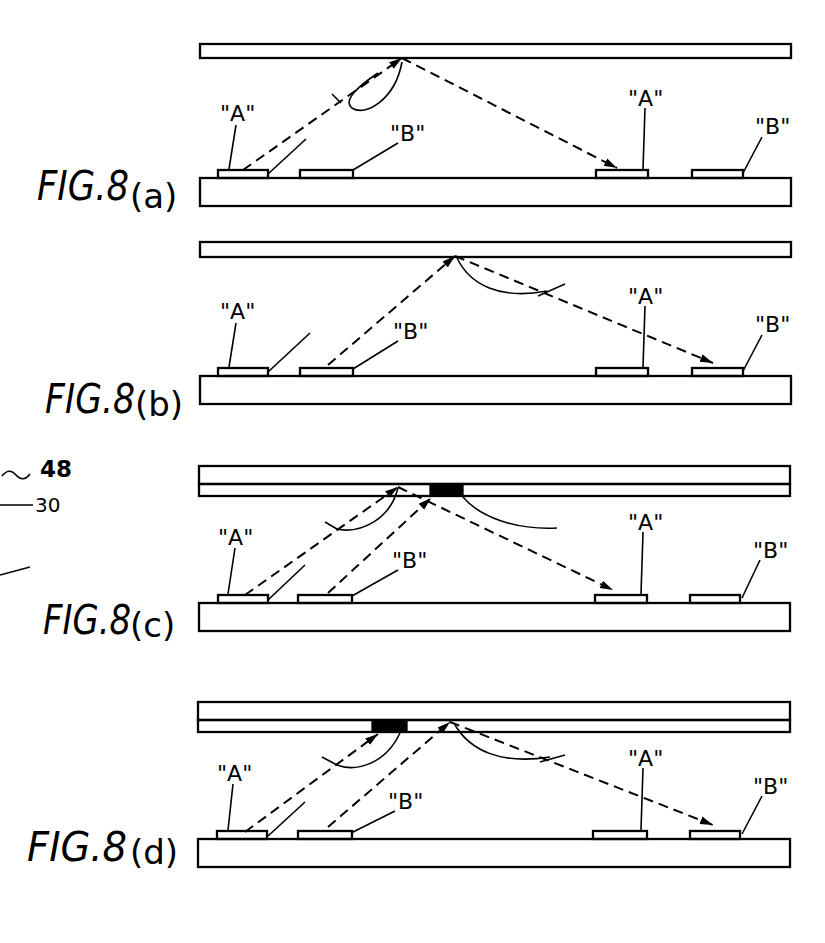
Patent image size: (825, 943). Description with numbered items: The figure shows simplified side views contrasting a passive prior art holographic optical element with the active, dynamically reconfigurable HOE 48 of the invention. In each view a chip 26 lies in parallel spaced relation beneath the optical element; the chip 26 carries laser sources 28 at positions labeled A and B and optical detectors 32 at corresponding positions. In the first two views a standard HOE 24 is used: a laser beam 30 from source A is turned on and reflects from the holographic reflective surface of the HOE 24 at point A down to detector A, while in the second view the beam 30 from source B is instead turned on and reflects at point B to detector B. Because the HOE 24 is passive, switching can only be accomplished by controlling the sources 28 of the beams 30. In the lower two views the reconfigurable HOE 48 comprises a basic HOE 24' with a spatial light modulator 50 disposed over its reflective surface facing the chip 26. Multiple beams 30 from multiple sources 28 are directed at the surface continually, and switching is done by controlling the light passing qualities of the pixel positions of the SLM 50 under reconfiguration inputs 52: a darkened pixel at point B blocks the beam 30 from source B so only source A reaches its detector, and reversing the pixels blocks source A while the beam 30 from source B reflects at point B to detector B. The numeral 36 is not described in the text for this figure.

In FIG. 8A, the HOE 24 is at (495, 73).
In FIG. 8B, the HOE 24 is at (495, 271).
In FIG. 8C, the basic HOE 24' is at (494, 456).
In FIG. 8D, the basic HOE 24' is at (494, 692).
In FIG. 8A, the chip 26 is at (200, 177).
In FIG. 8B, the chip 26 is at (477, 362).
In FIG. 8C, the chip 26 is at (476, 589).
In FIG. 8D, the chip 26 is at (476, 825).
In FIG. 8A, the sources 28 is at (321, 169).
In FIG. 8B, the sources 28 is at (285, 347).
In FIG. 8C, the sources 28 is at (285, 573).
In FIG. 8D, the sources 28 is at (284, 809).
In FIG. 8A, the laser beam 30 is at (398, 89).
In FIG. 8B, the laser beam 30 is at (573, 304).
In FIG. 8C, the laser beam 30 is at (383, 513).
In FIG. 8D, the laser beam 30 is at (565, 767).
In FIG. 8A, the optical detectors 32 is at (648, 173).
In FIG. 8B, the optical detectors 32 is at (669, 329).
In FIG. 8C, the optical detectors 32 is at (667, 556).
In FIG. 8D, the optical detectors 32 is at (666, 792).
In FIG. 8C, the adjacent sheet element 36 is at (29, 566).
In FIG. 8C, the reconfigurable HOE 48 is at (305, 462).
In FIG. 8D, the reconfigurable HOE 48 is at (302, 695).
In FIG. 8C, the spatial light modulator 50 is at (588, 488).
In FIG. 8D, the spatial light modulator 50 is at (588, 723).
In FIG. 8C, the reconfiguration inputs 52 is at (463, 485).
In FIG. 8D, the reconfiguration inputs 52 is at (407, 722).